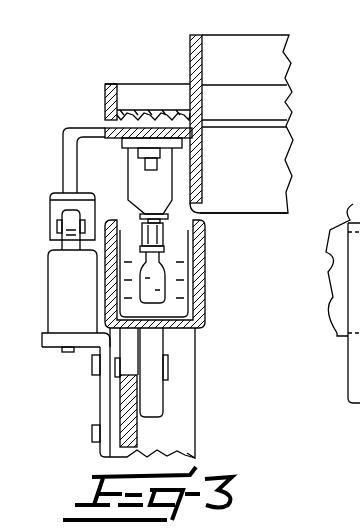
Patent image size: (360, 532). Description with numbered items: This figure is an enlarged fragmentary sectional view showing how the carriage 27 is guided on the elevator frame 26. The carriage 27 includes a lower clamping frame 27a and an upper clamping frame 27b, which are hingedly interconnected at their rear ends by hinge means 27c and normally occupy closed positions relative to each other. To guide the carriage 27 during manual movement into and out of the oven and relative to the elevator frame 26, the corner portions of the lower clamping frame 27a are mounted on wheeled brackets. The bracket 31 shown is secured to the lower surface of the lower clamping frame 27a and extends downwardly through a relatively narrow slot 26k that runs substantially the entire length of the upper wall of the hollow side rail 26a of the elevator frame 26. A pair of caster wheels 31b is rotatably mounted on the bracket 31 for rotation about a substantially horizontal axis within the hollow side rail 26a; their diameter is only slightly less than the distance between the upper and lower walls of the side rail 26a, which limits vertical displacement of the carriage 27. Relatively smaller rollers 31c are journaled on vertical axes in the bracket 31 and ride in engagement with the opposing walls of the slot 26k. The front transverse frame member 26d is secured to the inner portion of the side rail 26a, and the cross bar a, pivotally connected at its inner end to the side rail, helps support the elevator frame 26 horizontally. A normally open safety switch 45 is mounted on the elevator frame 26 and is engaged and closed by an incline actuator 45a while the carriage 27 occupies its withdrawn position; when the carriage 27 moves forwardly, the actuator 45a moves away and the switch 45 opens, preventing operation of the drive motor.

The carriage 27 is at (297, 62).
The lower clamping frame 27a is at (290, 170).
The upper clamping frame 27b is at (289, 103).
The hinge means 27c is at (291, 125).
The elevator frame 26 is at (215, 296).
The side rail 26a is at (207, 322).
The front transverse frame member 26d is at (196, 424).
The slot 26k is at (197, 197).
The bracket 31 is at (138, 173).
The caster wheels 31b is at (206, 265).
The rollers 31c is at (206, 242).
The safety switch 45 is at (48, 284).
The incline actuator 45a is at (50, 205).
The cross bar a is at (138, 430).